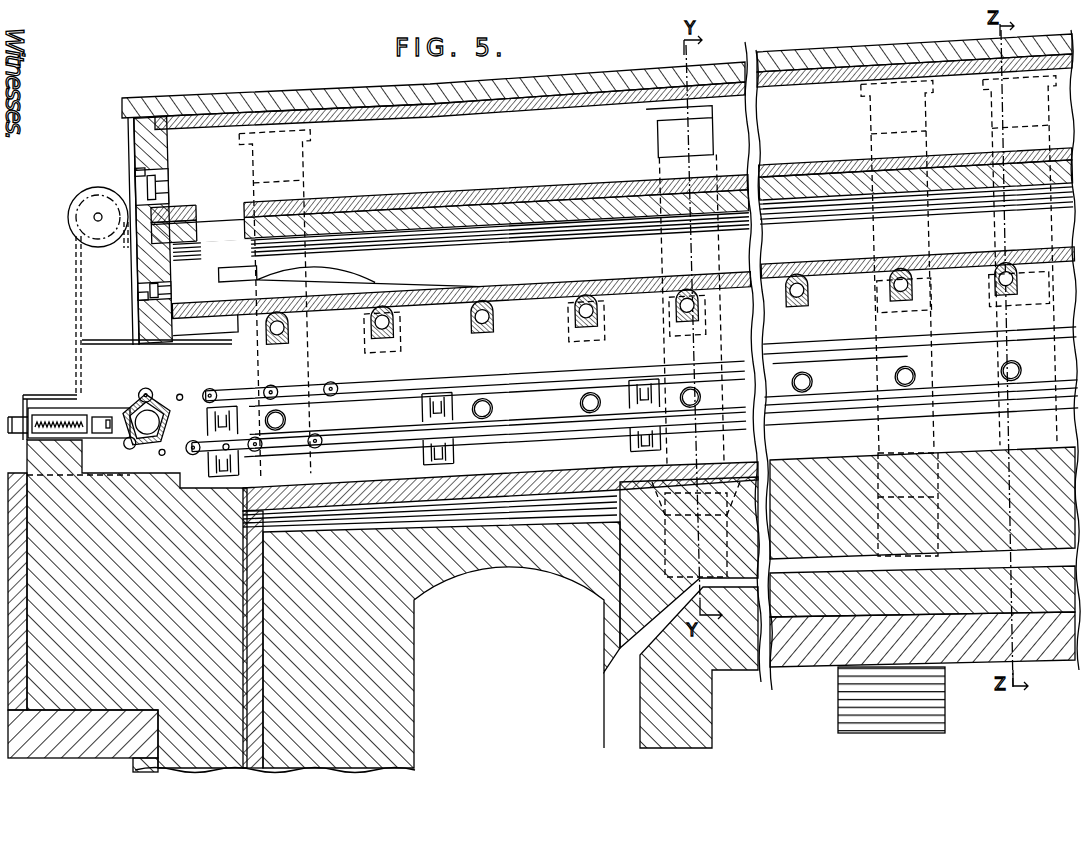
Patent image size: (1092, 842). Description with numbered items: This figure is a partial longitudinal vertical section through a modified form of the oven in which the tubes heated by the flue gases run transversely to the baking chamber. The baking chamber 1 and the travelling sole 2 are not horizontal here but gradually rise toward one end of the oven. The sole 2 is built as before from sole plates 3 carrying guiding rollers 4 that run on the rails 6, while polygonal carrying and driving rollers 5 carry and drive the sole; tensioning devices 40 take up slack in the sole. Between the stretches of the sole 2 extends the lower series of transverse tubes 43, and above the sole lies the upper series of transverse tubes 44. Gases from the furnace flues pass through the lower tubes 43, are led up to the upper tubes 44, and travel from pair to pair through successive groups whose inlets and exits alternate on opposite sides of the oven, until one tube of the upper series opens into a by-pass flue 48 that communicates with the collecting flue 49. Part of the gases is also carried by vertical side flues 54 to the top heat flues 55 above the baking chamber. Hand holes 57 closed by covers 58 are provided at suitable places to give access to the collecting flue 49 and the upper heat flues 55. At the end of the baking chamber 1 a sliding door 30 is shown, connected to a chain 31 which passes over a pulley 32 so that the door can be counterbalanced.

The baking chamber 1 is at (623, 304).
The sole 2 is at (180, 396).
The sole plates 3 is at (214, 397).
The guiding rollers 4 is at (273, 391).
The polygonal carrying and driving rollers 5 is at (168, 426).
The rails 6 is at (568, 380).
The sliding doors 30 is at (78, 347).
The chains 31 is at (74, 262).
The pulleys 32 is at (99, 237).
The tensioning devices 40 is at (84, 416).
The lower series of transverse tubes 43 is at (288, 421).
The upper series of transverse tubes 44 is at (292, 331).
The by-pass flue 48 is at (296, 166).
The collecting flue 49 is at (598, 188).
The vertical side flues 54 is at (416, 291).
The top heat flues 55 is at (623, 233).
The hand holes 57 is at (161, 190).
The covers 58 is at (131, 182).